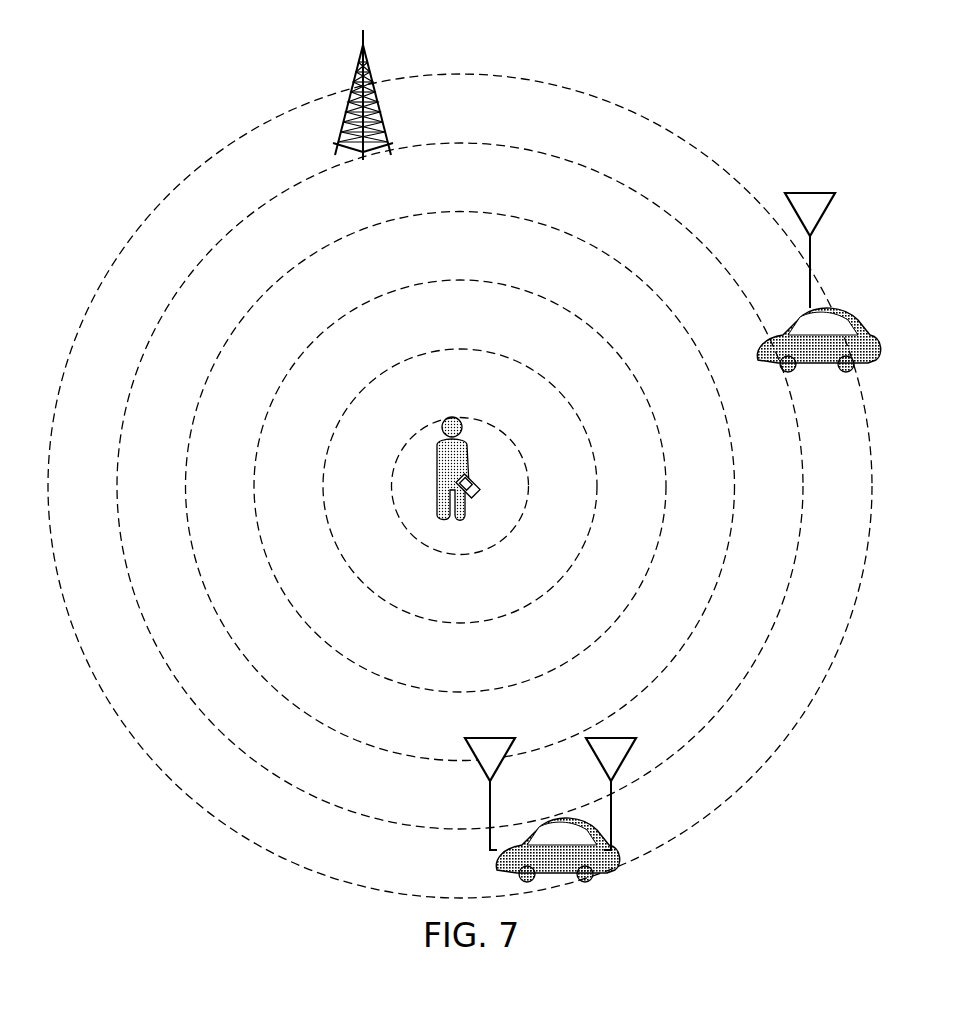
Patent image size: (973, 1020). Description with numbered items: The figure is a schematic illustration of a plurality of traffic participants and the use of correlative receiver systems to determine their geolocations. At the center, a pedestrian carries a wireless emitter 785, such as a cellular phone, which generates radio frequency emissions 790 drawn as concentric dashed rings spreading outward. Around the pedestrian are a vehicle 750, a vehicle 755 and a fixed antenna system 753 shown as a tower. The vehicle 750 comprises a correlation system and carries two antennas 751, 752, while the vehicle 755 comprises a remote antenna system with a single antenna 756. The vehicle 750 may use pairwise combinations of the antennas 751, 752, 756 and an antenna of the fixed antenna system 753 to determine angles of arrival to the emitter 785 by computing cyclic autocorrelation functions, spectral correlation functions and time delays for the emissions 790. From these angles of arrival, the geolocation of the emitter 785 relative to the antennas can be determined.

The radio frequency emissions 790 is at (857, 600).
The fixed antenna system 753 is at (350, 66).
The wireless emitter 785 is at (492, 482).
The antenna 756 is at (833, 205).
The vehicle 755 is at (870, 345).
The antenna 751 is at (470, 762).
The antenna 752 is at (630, 770).
The vehicle 750 is at (600, 870).